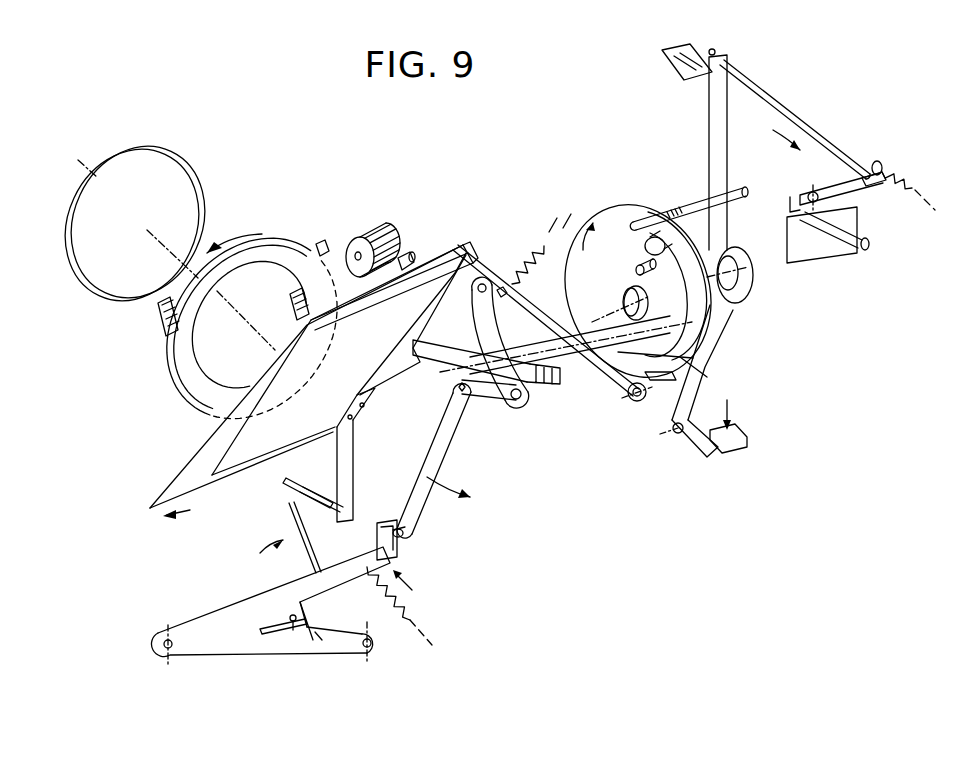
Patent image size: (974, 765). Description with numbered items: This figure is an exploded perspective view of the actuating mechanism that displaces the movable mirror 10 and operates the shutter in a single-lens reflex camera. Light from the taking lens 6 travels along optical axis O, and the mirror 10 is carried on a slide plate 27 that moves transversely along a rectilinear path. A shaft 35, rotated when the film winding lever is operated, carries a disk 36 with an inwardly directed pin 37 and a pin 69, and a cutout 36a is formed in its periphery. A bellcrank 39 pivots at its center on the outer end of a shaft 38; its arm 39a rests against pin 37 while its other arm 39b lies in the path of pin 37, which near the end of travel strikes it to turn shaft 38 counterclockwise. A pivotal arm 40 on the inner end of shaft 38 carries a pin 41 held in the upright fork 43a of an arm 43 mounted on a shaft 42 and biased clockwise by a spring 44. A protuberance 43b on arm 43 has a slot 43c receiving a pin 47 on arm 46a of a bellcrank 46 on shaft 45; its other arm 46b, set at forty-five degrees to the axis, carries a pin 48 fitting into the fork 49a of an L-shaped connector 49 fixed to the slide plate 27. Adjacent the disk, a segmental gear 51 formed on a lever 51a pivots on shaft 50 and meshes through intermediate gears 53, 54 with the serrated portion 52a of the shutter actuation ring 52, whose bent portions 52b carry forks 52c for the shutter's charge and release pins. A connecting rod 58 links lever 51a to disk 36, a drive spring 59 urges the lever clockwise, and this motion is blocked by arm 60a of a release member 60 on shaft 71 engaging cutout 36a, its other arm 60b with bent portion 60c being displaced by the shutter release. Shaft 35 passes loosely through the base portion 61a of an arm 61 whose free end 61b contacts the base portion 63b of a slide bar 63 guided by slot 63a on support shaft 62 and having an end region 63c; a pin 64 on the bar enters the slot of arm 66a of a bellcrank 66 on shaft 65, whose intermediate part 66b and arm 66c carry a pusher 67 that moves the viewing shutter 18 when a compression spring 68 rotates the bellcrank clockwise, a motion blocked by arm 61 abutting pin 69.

The taking lens 6 is at (122, 294).
The optical axis O is at (219, 312).
The movable mirror 10 is at (238, 465).
The viewing shutter 18 is at (810, 250).
The slide plate 27 is at (203, 440).
The shaft 35 is at (623, 302).
The disk 36 is at (620, 212).
The cutout 36a is at (703, 371).
The pin 37 is at (630, 266).
The shaft 38 is at (692, 336).
The bellcrank 39 is at (702, 308).
The arm 39a is at (655, 236).
The other arm 39b is at (661, 373).
The pivotal arm 40 is at (455, 420).
The pin 41 is at (403, 540).
The shaft 42 is at (165, 632).
The arm 43 is at (230, 614).
The upright fork 43a is at (388, 520).
The protuberance 43b is at (306, 640).
The slot 43c is at (265, 634).
The spring 44 is at (411, 610).
The shaft 45 is at (366, 668).
The bellcrank 46 is at (380, 640).
The arm 46a is at (322, 645).
The arm 46b is at (290, 512).
The pin 47 is at (290, 616).
The pin 48 is at (283, 490).
The L-shaped connector 49 is at (345, 447).
The fork 49a is at (320, 500).
The shaft 50 is at (632, 402).
The segmental gear 51 is at (414, 356).
The lever 51a is at (520, 300).
The shutter actuation ring 52 is at (268, 247).
The serrated portion 52a is at (320, 244).
The bent portions 52b is at (300, 290).
The forks 52c is at (160, 335).
The intermediate gear 53 is at (360, 237).
The intermediate gear 54 is at (408, 256).
The connecting rod 58 is at (458, 387).
The drive spring 59 is at (522, 260).
The release member 60 is at (700, 450).
The arm 60a is at (668, 433).
The other arm 60b is at (714, 460).
The bent portion 60c is at (747, 446).
The arm 61 is at (709, 158).
The base portion 61a is at (752, 258).
The free end 61b is at (727, 62).
The support shaft 62 is at (715, 42).
The slide bar 63 is at (805, 135).
The guide slot 63a is at (686, 62).
The base portion 63b is at (665, 49).
The lever end 63c is at (855, 160).
The pin 64 is at (880, 167).
The shaft 65 is at (806, 196).
The bellcrank 66 is at (795, 212).
The arm 66a is at (836, 183).
The bar 66b is at (862, 192).
The other arm 66c is at (836, 240).
The pusher 67 is at (871, 244).
The compression spring 68 is at (918, 186).
The pin 69 is at (738, 188).
The shaft 71 is at (702, 424).